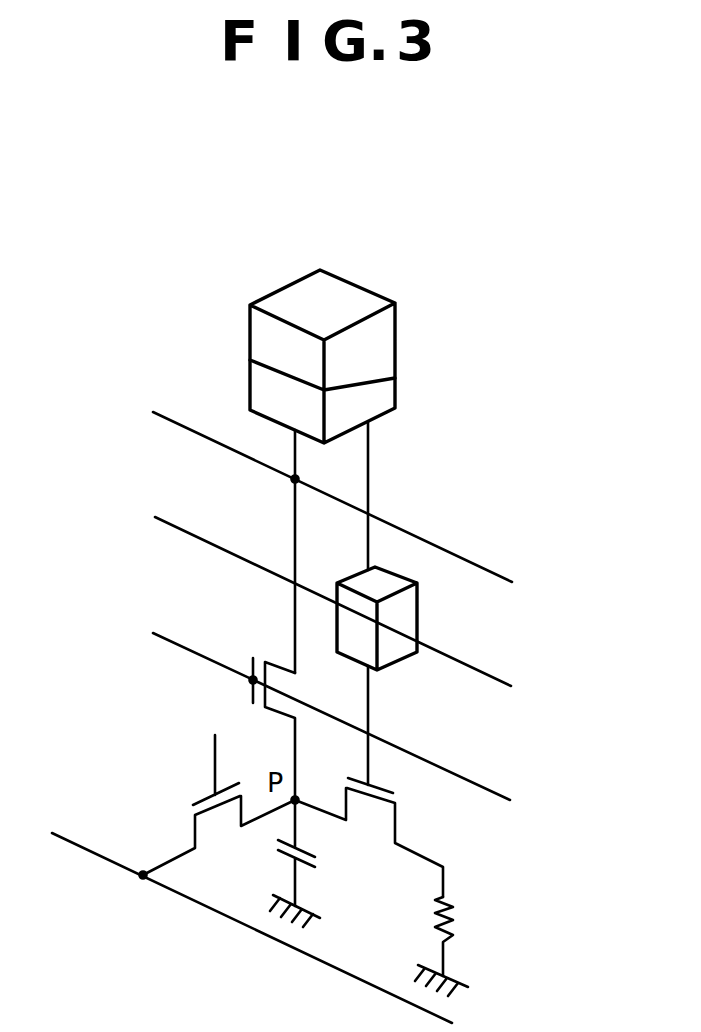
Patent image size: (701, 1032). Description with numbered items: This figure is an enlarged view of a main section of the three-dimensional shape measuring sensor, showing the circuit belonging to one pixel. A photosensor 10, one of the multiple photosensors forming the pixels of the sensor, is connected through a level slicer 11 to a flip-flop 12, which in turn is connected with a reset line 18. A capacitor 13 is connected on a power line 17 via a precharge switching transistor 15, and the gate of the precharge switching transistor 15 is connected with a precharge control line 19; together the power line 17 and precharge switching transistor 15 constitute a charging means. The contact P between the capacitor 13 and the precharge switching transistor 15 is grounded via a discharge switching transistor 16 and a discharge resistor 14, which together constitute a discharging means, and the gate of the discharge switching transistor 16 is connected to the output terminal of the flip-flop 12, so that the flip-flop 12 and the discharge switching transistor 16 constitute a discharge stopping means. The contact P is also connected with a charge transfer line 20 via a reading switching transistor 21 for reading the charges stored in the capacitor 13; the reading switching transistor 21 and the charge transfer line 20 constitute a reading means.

The photosensor 10 is at (378, 337).
The level slicer 11 is at (385, 390).
The flip-flop 12 is at (403, 612).
The capacitor 13 is at (317, 863).
The discharge resistor 14 is at (448, 912).
The precharge switching transistor 15 is at (258, 662).
The discharge switching transistor 16 is at (397, 805).
The power line 17 is at (452, 550).
The reset line 18 is at (488, 668).
The precharge control line 19 is at (460, 775).
The charge transfer line 20 is at (263, 935).
The reading switching transistor 21 is at (192, 808).